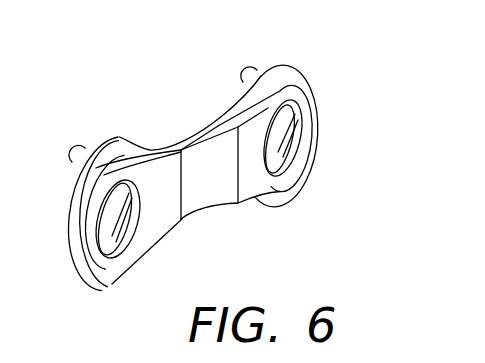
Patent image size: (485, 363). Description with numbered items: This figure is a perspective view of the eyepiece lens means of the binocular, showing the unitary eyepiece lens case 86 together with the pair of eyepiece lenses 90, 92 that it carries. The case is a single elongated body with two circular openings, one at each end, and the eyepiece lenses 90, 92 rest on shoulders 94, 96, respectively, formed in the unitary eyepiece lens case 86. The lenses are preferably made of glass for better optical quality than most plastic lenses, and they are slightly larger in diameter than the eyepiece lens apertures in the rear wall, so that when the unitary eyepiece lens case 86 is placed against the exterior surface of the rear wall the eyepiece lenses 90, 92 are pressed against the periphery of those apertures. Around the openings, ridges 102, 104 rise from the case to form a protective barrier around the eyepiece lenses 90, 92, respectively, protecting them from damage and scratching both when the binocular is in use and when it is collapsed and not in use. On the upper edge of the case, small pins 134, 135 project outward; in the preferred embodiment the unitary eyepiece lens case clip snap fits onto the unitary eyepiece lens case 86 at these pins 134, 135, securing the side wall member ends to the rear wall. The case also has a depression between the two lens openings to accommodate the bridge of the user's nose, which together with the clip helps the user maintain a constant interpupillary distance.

The unitary eyepiece lens case 86 is at (210, 205).
The eyepiece lens 90 is at (103, 220).
The eyepiece lens 92 is at (318, 125).
The shoulder 94 is at (125, 240).
The shoulder 96 is at (290, 163).
The ridge 102 is at (112, 284).
The ridge 104 is at (318, 148).
The pin 134 is at (77, 148).
The pin 135 is at (252, 69).